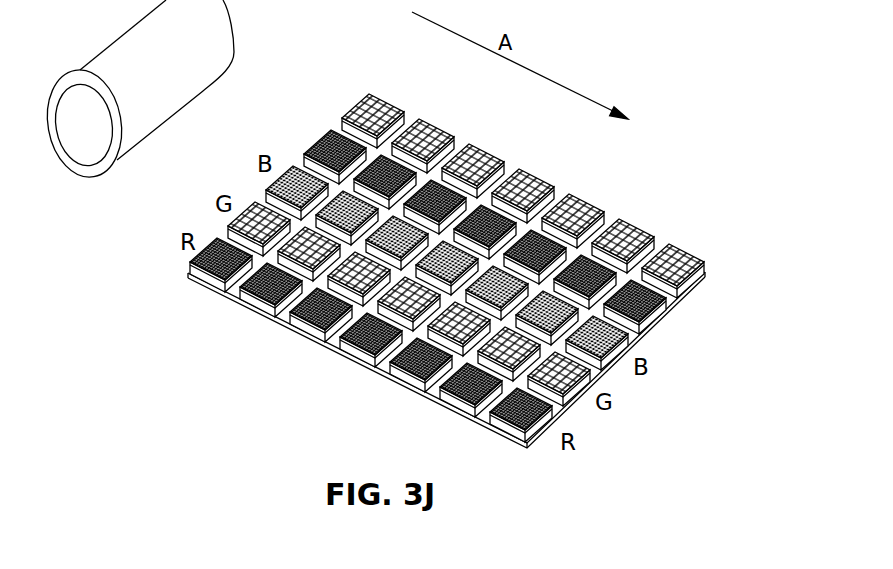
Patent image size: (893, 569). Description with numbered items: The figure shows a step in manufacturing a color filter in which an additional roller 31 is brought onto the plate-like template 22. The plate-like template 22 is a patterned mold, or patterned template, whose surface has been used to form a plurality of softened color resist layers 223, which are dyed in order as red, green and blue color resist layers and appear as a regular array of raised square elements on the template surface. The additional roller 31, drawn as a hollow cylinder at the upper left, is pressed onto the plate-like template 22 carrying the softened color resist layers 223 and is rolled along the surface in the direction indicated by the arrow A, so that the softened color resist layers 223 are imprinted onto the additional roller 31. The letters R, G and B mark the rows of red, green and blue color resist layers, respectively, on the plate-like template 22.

The additional roller 31 is at (82, 68).
The plate-like template 22 is at (309, 130).
The softened color resist layers 223 is at (703, 267).